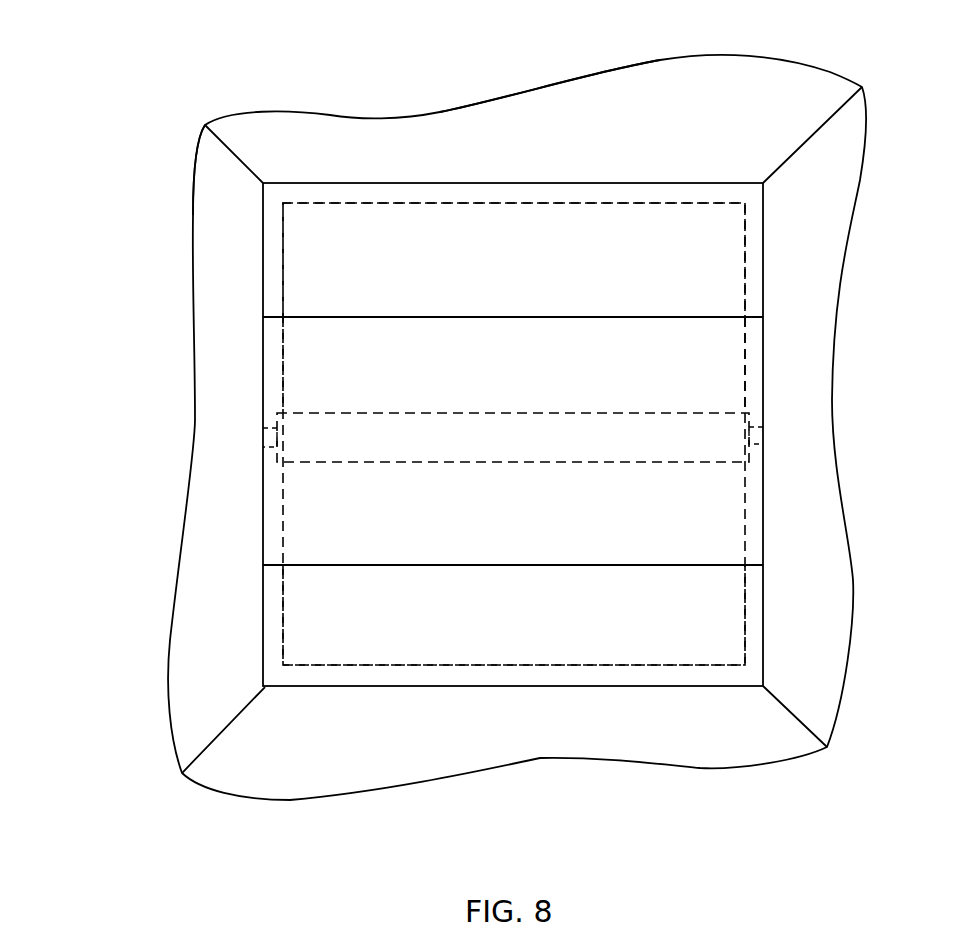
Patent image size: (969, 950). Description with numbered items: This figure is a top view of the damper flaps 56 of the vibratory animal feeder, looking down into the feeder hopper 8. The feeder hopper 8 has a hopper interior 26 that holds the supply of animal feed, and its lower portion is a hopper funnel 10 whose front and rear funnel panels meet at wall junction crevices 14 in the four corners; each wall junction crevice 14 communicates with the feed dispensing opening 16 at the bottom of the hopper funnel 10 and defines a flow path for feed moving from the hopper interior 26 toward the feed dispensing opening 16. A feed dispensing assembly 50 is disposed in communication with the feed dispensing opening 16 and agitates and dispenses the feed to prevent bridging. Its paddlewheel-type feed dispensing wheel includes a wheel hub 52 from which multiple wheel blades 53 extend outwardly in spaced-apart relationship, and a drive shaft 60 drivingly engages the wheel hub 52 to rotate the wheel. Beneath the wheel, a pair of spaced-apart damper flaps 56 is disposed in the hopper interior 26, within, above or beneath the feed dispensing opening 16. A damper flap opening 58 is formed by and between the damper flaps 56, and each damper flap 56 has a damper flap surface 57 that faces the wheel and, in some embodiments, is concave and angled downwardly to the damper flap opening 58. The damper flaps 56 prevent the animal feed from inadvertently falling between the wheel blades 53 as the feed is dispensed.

The feeder hopper 8 is at (136, 166).
The hopper funnel 10 is at (190, 218).
The wall junction crevices 14 is at (228, 143).
The feed dispensing opening 16 is at (353, 191).
The hopper interior 26 is at (486, 141).
The feed dispensing assembly 50 is at (602, 186).
The wheel hub 52 is at (598, 425).
The wheel blades 53 is at (565, 218).
The damper flaps 56 is at (477, 322).
The damper flap surface 57 is at (685, 282).
The damper flap opening 58 is at (322, 351).
The drive shaft 60 is at (265, 430).